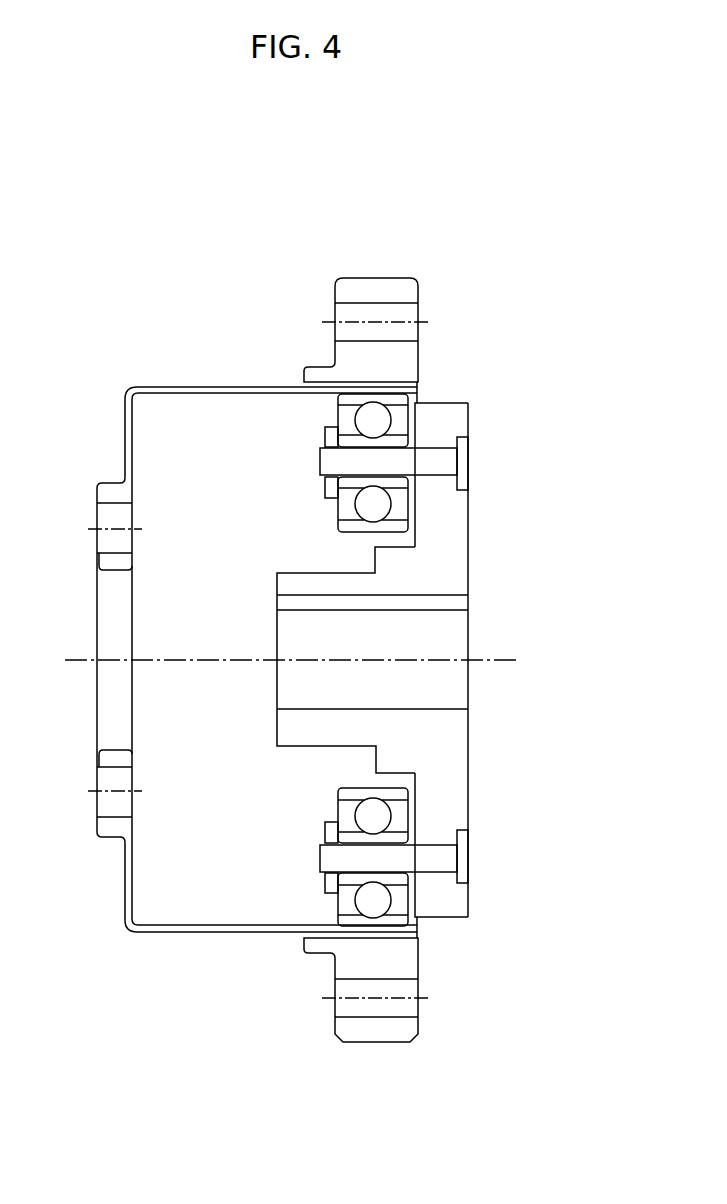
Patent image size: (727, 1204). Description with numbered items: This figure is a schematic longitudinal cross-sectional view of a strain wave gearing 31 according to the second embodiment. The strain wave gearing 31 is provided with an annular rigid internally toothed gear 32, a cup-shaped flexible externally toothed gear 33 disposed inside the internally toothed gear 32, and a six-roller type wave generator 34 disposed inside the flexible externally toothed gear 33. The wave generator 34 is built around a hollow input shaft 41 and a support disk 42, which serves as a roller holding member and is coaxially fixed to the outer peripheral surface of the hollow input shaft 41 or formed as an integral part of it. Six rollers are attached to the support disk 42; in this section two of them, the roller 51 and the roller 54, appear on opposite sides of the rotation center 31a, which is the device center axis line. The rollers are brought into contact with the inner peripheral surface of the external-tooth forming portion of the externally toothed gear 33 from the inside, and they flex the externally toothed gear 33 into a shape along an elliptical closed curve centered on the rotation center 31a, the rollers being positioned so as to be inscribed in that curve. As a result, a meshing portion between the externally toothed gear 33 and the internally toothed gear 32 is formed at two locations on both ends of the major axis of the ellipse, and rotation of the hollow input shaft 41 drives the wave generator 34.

The strain wave gearing 31 is at (280, 313).
The rotation center 31a is at (87, 663).
The internally toothed gear 32 is at (407, 272).
The externally toothed gear 33 is at (215, 387).
The wave generator 34 is at (482, 438).
The hollow input shaft 41 is at (298, 738).
The support disk 42 is at (455, 760).
The roller 51 is at (320, 415).
The roller 54 is at (317, 895).